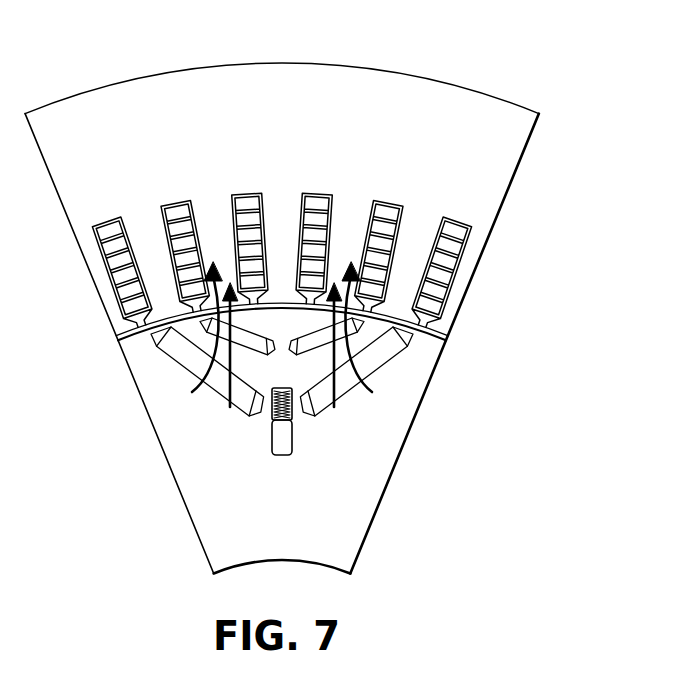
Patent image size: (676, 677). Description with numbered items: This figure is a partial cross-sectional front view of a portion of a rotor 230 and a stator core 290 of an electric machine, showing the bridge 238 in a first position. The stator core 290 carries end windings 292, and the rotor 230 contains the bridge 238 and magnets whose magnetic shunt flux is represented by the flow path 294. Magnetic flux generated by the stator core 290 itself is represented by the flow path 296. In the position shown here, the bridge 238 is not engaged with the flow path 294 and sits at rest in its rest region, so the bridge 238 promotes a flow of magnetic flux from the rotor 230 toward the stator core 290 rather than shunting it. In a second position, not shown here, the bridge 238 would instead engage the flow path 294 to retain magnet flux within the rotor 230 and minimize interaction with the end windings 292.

The stator core 290 is at (445, 82).
The end windings 292 is at (248, 194).
The flow path 294 is at (230, 407).
The flow path 296 is at (192, 390).
The rotor 230 is at (323, 446).
The bridge 238 is at (294, 438).